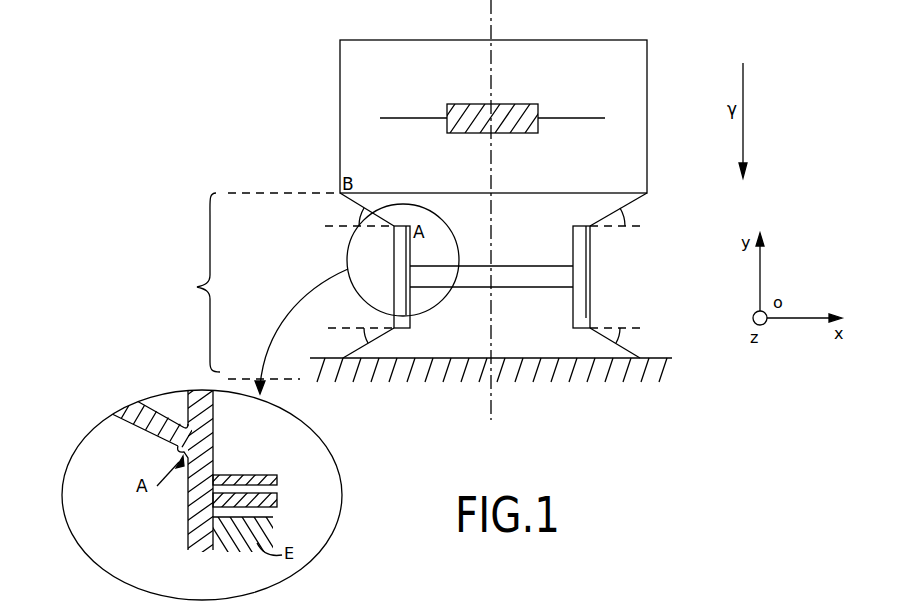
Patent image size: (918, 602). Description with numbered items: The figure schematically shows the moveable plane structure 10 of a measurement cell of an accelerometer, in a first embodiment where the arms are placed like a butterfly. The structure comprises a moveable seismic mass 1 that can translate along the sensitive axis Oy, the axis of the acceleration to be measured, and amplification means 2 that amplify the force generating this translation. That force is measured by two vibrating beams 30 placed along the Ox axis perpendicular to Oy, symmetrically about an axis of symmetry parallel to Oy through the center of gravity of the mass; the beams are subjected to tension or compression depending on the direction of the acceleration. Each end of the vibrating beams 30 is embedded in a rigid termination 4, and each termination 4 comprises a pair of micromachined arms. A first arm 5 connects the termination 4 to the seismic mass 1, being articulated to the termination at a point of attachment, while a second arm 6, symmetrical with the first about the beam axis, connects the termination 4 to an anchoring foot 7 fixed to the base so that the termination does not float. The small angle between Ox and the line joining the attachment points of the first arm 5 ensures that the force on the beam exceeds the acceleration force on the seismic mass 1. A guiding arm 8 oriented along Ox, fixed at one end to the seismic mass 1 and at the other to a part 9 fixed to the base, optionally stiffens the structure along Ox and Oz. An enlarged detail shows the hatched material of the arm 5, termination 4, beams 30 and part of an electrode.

The seismic mass 1 is at (355, 79).
The amplification means 2 is at (259, 286).
The termination 4 is at (400, 298).
The first micromachined arm 5 is at (325, 205).
The second micromachined arm 6 is at (353, 353).
The anchoring foot 7 is at (610, 373).
The guiding arm 8 is at (582, 118).
The part fixed to the base 9 is at (513, 104).
The moveable plane structure 10 is at (686, 32).
The vibrating beam 30 is at (437, 266).